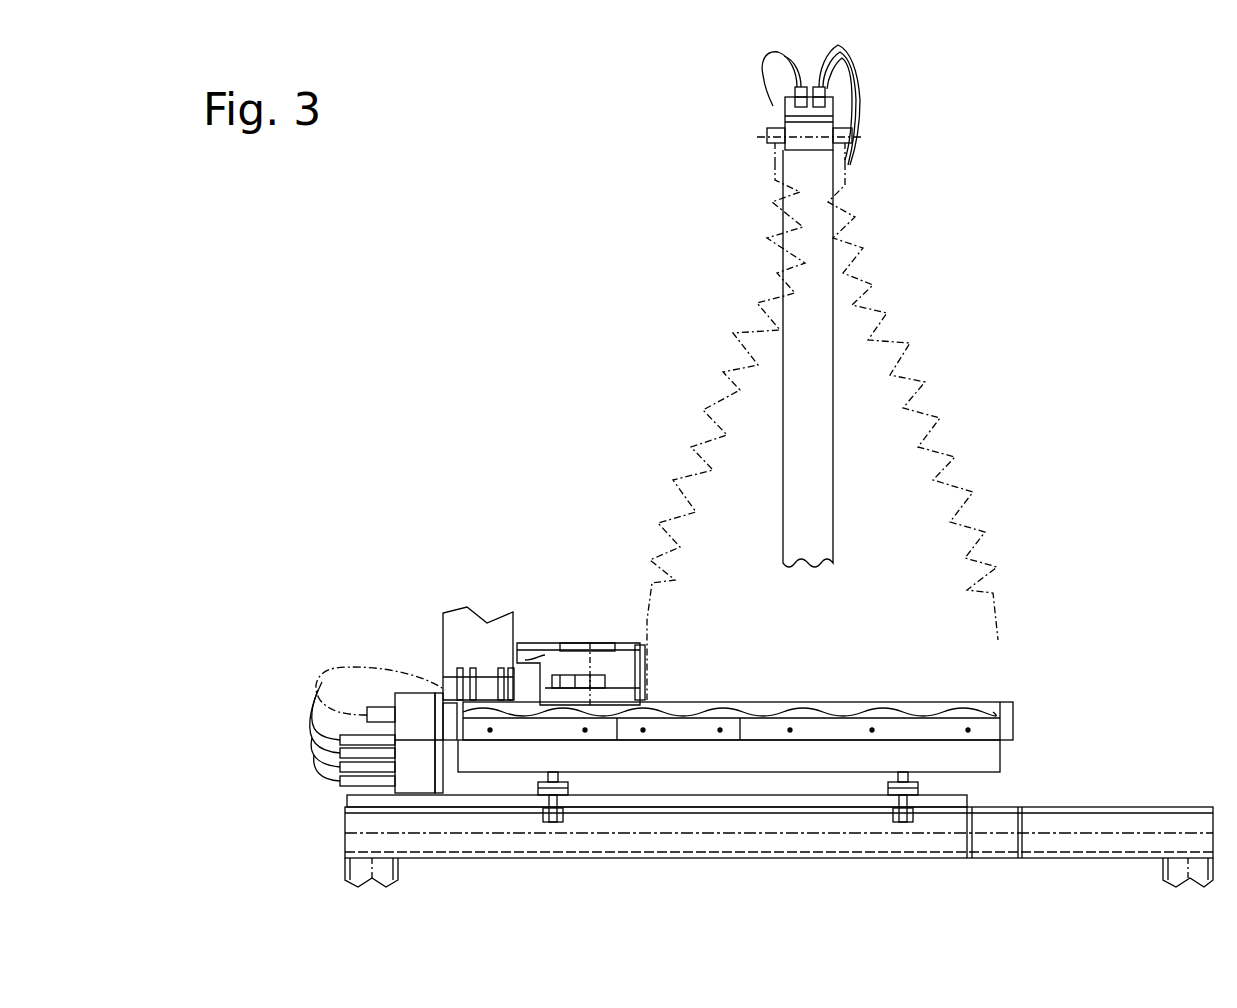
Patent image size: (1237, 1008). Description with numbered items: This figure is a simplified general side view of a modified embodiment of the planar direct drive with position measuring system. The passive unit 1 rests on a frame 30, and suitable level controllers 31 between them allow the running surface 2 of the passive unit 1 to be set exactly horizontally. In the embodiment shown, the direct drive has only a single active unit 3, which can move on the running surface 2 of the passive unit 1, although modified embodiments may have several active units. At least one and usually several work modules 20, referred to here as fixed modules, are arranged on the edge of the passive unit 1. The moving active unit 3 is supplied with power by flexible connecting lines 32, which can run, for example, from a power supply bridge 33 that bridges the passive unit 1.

The passive unit 1 is at (983, 757).
The running surface 2 is at (880, 702).
The active unit 3 is at (655, 668).
The work module 20 is at (485, 647).
The frame 30 is at (365, 845).
The level controller 31 is at (920, 770).
The flexible connecting line 32 is at (705, 410).
The power supply bridge 33 is at (785, 108).